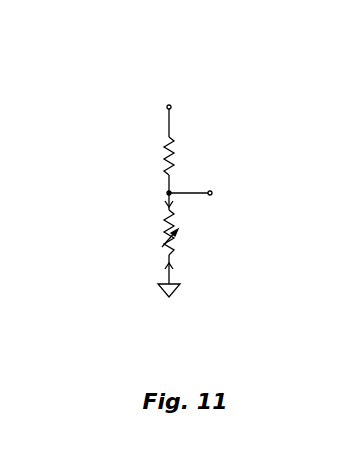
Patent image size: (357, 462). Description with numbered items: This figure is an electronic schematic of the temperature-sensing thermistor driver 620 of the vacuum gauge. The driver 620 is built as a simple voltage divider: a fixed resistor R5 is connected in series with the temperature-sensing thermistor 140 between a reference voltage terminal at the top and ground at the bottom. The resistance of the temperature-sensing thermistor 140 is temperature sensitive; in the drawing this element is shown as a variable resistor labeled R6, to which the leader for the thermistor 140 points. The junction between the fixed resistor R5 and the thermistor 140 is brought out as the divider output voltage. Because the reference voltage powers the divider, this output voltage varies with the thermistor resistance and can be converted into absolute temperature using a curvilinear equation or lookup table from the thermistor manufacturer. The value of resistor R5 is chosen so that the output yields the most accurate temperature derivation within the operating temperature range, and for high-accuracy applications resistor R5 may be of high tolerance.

The temperature-sensing thermistor driver 620 is at (178, 68).
The temperature-sensing thermistor 140 is at (117, 251).
The fixed resistor R5 is at (163, 156).
The variable resistor R6 is at (175, 232).